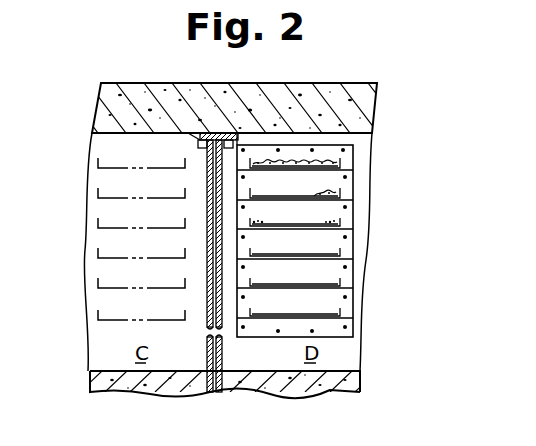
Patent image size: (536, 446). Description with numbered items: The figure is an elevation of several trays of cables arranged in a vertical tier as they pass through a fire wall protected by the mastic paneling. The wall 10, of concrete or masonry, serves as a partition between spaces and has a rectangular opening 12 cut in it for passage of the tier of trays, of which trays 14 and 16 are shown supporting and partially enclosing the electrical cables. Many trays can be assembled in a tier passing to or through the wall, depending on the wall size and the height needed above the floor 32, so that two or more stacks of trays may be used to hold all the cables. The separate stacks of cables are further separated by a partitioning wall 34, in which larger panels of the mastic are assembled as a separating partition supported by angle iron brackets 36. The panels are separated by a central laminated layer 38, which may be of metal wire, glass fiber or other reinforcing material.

The wall 10 is at (369, 141).
The rectangular opening 12 is at (360, 236).
The tray 14 is at (340, 159).
The tray 16 is at (338, 191).
The floor 32 is at (343, 392).
The partitioning wall 34 is at (224, 352).
The angle iron brackets 36 is at (194, 135).
The central laminated layer 38 is at (349, 328).